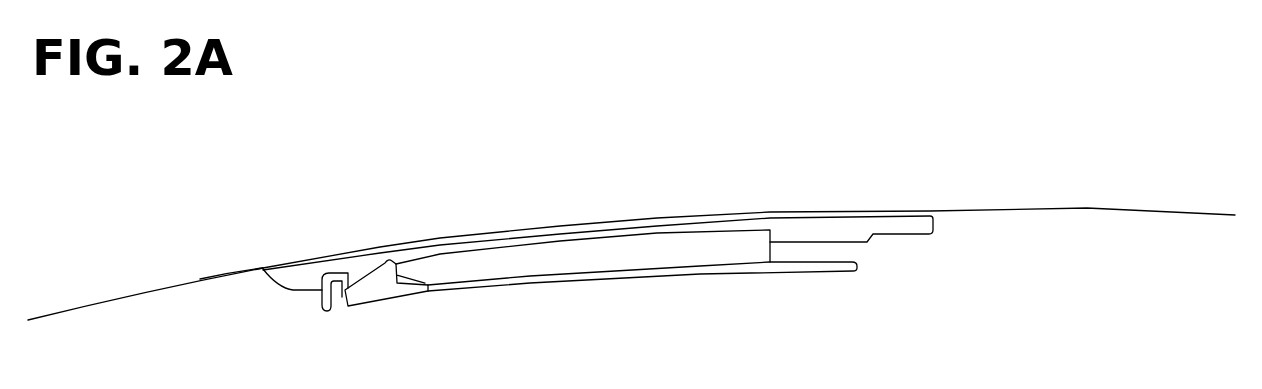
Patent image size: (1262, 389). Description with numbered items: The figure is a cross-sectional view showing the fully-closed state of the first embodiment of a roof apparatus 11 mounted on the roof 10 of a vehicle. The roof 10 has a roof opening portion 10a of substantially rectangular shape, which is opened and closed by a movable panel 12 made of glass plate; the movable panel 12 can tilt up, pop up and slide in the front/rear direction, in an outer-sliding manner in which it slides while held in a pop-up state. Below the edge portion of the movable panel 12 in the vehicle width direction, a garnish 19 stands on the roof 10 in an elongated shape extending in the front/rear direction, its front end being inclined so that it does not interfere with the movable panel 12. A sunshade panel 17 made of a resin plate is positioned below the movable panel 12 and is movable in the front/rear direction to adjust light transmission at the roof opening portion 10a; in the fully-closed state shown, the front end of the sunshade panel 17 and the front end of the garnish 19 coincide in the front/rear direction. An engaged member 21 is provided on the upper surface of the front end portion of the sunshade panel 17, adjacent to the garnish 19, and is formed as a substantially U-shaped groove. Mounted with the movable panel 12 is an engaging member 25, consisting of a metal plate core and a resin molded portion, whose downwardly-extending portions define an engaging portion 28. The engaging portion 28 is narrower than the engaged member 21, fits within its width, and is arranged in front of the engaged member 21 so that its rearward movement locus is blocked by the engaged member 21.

The roof 10 is at (91, 300).
The roof opening portion 10a is at (262, 267).
The roof apparatus 11 is at (749, 224).
The movable panel 12 is at (655, 217).
The sunshade panel 17 is at (487, 293).
The garnish 19 is at (712, 240).
The engaged member 21 is at (388, 261).
The engaging member 25 is at (335, 314).
The engaging portion 28 is at (324, 313).